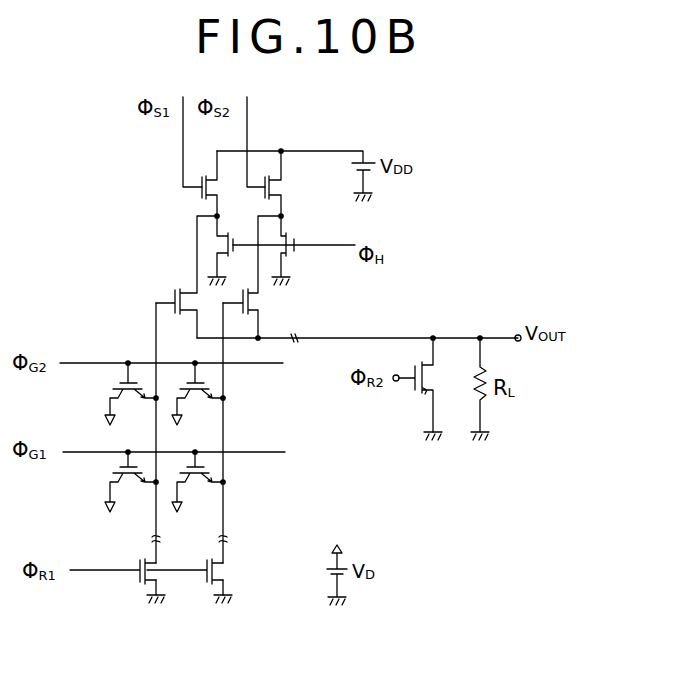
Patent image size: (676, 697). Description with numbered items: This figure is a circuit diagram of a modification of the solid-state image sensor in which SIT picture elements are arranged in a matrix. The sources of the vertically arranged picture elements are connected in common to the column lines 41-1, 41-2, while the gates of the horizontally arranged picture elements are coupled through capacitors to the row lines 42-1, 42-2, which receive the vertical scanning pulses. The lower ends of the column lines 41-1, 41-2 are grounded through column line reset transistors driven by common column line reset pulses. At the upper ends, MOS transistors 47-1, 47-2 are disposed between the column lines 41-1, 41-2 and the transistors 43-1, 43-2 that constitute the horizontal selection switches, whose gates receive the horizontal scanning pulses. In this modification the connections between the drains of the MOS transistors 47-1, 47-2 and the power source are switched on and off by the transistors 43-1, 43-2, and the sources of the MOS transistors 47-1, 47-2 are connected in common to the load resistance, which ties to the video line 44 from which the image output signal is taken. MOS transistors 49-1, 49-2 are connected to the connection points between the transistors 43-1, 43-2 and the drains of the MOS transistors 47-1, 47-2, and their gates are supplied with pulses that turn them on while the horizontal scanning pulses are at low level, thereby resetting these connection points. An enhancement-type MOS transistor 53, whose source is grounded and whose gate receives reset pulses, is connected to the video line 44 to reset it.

The horizontal selection switch transistor 43-1 is at (199, 204).
The horizontal selection switch transistor 43-2 is at (278, 191).
The reset MOS transistor 49-1 is at (219, 247).
The reset MOS transistor 49-2 is at (302, 243).
The MOS transistor 47-1 is at (175, 288).
The MOS transistor 47-2 is at (259, 298).
The column line 41-1 is at (155, 323).
The column line 41-2 is at (225, 350).
The video line 44 is at (355, 338).
The row line 42-2 is at (116, 361).
The row line 42-1 is at (98, 451).
The resetting MOS transistor 53 is at (418, 397).